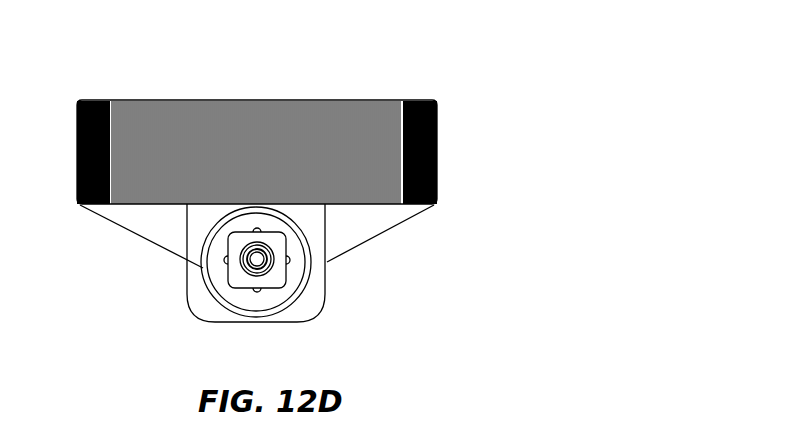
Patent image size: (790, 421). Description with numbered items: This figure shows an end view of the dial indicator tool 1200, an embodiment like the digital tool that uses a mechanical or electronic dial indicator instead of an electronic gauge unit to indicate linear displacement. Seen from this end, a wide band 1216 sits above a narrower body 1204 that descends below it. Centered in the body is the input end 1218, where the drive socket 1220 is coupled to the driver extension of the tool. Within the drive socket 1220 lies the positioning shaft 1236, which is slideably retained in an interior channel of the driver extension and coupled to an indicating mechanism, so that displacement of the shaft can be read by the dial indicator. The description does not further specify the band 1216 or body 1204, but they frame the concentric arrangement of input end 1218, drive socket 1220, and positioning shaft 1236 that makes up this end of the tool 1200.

The tool 1200 is at (393, 66).
The cylindrical shroud 1216 is at (206, 101).
The camera housing 1204 is at (327, 265).
The input end 1218 is at (287, 307).
The drive socket 1220 is at (228, 262).
The positioning shaft 1236 is at (257, 259).